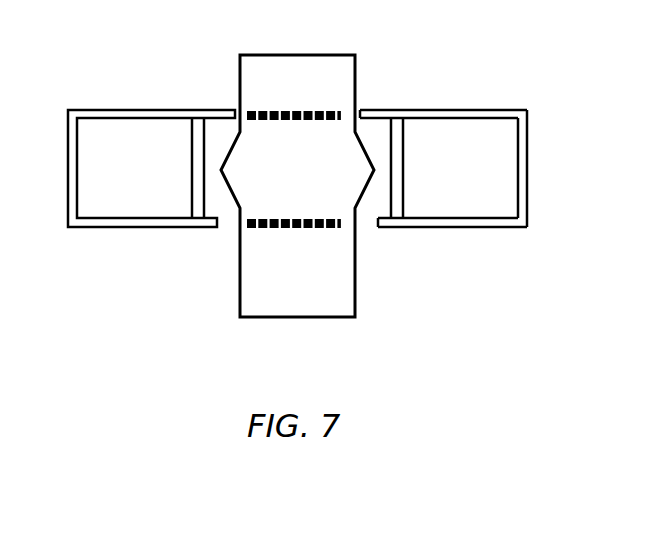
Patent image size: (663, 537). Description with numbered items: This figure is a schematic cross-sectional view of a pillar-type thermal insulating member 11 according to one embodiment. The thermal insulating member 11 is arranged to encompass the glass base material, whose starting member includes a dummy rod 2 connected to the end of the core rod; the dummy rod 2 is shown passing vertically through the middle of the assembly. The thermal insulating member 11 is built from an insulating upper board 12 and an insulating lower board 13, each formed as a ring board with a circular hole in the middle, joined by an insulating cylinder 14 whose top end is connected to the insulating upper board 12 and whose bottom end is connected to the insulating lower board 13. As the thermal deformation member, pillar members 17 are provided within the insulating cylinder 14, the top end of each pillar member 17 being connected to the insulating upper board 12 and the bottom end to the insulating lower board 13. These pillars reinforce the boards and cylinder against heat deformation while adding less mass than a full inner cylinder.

The dummy rod 2 is at (355, 70).
The thermal insulating member 11 is at (94, 97).
The insulating upper board 12 is at (475, 109).
The insulating lower board 13 is at (477, 228).
The insulating cylinder 14 is at (528, 167).
The pillar member 17 is at (192, 208).